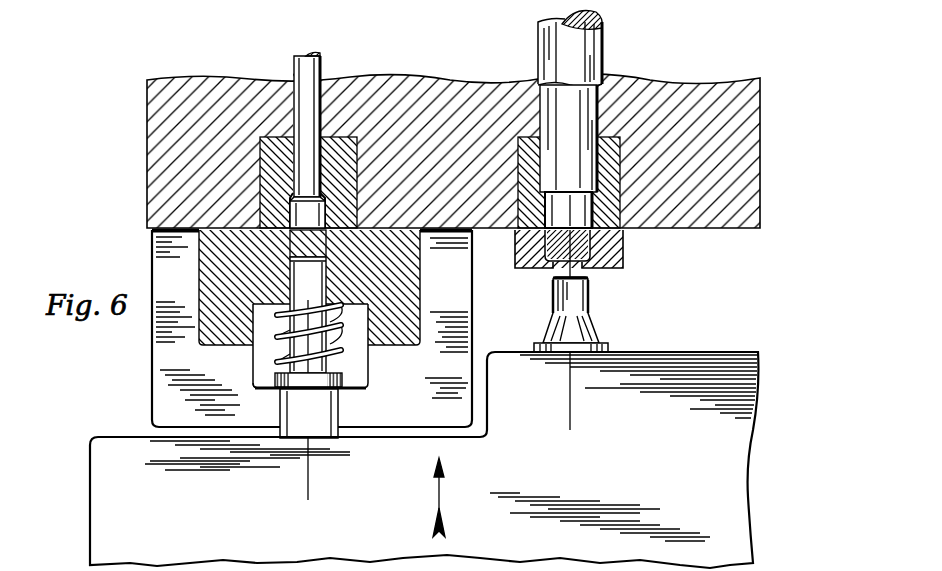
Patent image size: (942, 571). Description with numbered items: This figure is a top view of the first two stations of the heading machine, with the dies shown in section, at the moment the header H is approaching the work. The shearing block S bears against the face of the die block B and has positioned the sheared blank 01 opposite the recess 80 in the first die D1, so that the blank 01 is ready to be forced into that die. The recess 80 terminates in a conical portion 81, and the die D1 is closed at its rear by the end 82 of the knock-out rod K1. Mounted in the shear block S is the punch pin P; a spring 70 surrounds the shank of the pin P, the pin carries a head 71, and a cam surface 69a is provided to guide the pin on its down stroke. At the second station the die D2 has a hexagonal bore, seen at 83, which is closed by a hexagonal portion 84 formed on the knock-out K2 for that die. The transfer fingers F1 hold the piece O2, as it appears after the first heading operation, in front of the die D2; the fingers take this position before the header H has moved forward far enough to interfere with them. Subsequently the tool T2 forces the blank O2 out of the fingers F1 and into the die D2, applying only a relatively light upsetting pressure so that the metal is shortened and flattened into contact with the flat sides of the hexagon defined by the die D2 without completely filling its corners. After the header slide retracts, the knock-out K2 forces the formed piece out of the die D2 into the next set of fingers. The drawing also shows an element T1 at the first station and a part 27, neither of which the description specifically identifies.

The die block B is at (175, 167).
The knock-out rod K1 is at (311, 66).
The knock-out pin K2 is at (582, 50).
The die D1 is at (338, 156).
The die D2 is at (612, 152).
The end of knock-out rod 82 is at (306, 188).
The conical portion 81 is at (322, 197).
The recess 80 is at (330, 219).
The hexagonal portion 84 is at (575, 125).
The hexagonal bore 83 is at (586, 205).
The shearing block S is at (227, 261).
The blank 01 is at (312, 238).
The stripper housing 27 is at (193, 373).
The punch pin P is at (308, 378).
The spring 70 is at (342, 350).
The head 71 is at (345, 379).
The cam surface 69a is at (272, 391).
The first post T1 is at (303, 432).
The tool T2 is at (590, 290).
The transfer fingers F1 is at (534, 250).
The blank O2 is at (623, 238).
The header H is at (636, 449).